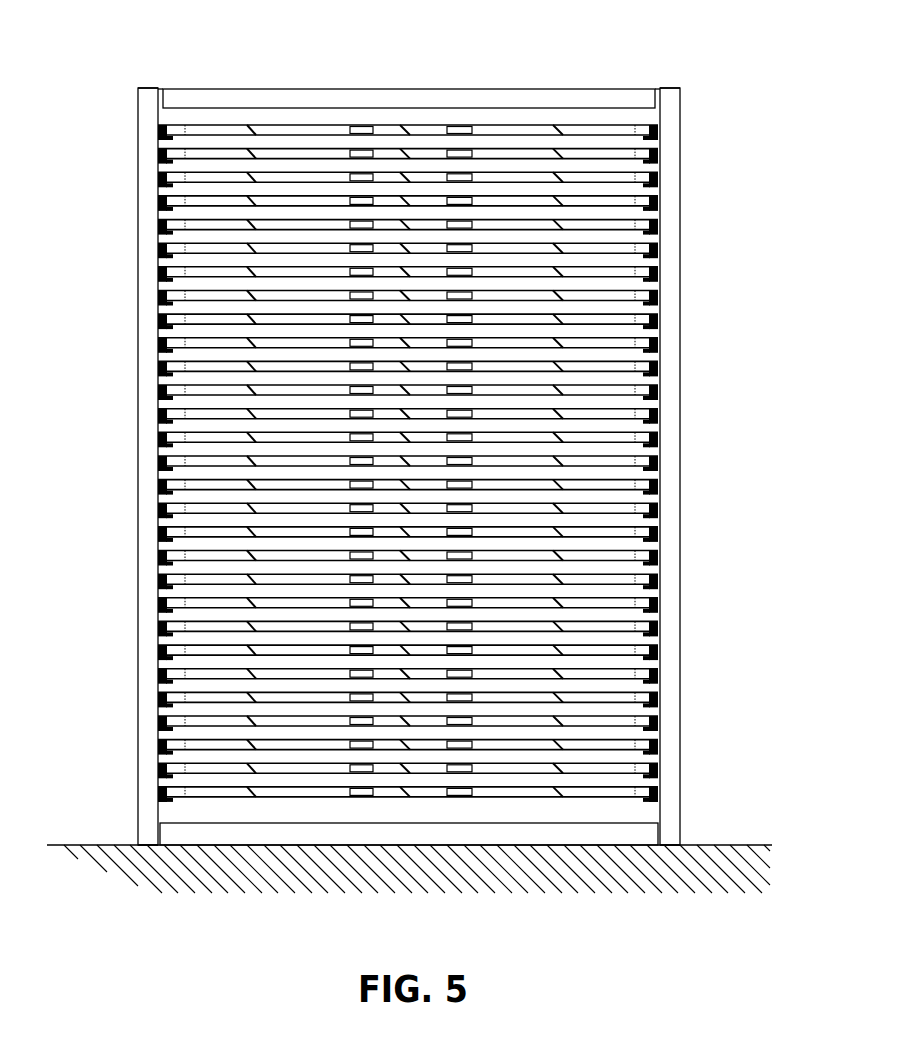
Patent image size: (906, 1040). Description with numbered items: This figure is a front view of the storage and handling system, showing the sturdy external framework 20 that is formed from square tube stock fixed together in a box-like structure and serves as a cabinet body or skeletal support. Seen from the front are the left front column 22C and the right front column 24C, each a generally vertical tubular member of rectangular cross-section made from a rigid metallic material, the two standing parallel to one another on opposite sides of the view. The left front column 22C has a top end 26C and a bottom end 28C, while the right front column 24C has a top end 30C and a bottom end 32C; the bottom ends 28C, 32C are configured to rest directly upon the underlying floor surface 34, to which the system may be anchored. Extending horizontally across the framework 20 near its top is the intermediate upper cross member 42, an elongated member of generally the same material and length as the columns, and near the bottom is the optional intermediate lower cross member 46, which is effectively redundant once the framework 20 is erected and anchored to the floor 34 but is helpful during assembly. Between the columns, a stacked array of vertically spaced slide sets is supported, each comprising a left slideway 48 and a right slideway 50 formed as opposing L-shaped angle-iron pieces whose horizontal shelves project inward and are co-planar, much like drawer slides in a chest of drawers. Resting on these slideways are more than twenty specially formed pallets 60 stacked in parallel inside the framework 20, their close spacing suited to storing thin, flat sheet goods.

The framework 20 is at (408, 471).
The left front column 22C is at (148, 416).
The right front column 24C is at (673, 460).
The top end of left front column 26C is at (148, 88).
The top end of right front column 30C is at (667, 88).
The bottom end of left front column 28C is at (143, 845).
The bottom end of right front column 32C is at (670, 845).
The floor surface 34 is at (723, 845).
The intermediate upper cross member 42 is at (416, 98).
The intermediate lower cross member 46 is at (432, 835).
The left slideway 48 is at (167, 806).
The right slideway 50 is at (651, 806).
The pallets 60 is at (568, 169).